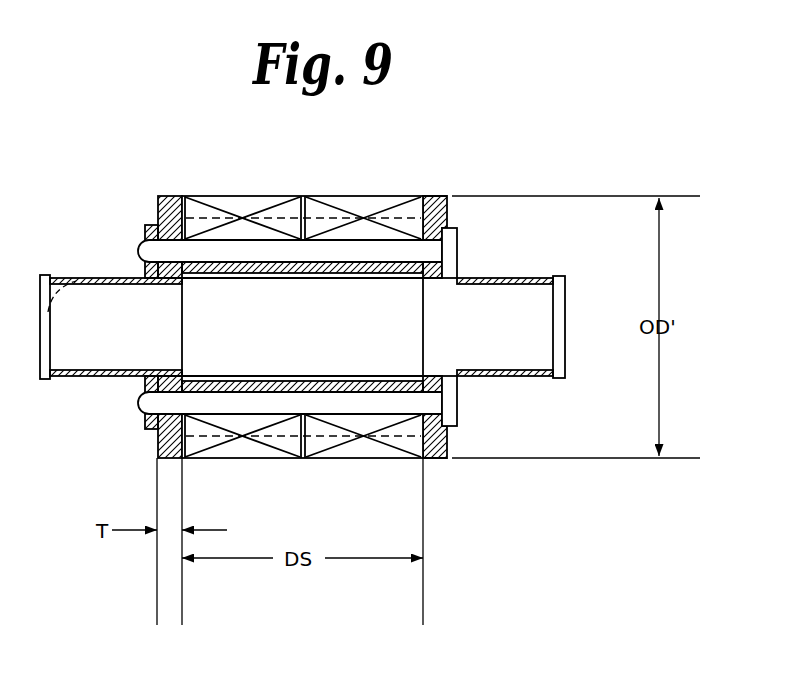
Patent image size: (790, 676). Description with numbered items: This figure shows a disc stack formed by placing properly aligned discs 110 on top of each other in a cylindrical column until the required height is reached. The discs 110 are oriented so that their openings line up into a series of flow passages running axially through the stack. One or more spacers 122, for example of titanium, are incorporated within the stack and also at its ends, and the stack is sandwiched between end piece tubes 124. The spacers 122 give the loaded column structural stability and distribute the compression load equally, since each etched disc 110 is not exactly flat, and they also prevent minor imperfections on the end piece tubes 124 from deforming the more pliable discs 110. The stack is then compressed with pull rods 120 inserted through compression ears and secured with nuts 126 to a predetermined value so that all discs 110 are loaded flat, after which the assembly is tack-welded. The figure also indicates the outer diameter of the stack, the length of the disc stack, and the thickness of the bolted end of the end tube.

The discs 110 is at (365, 194).
The pull rods 120 is at (459, 228).
The spacers 122 is at (303, 194).
The end piece tubes 124 is at (172, 194).
The nuts 126 is at (143, 226).